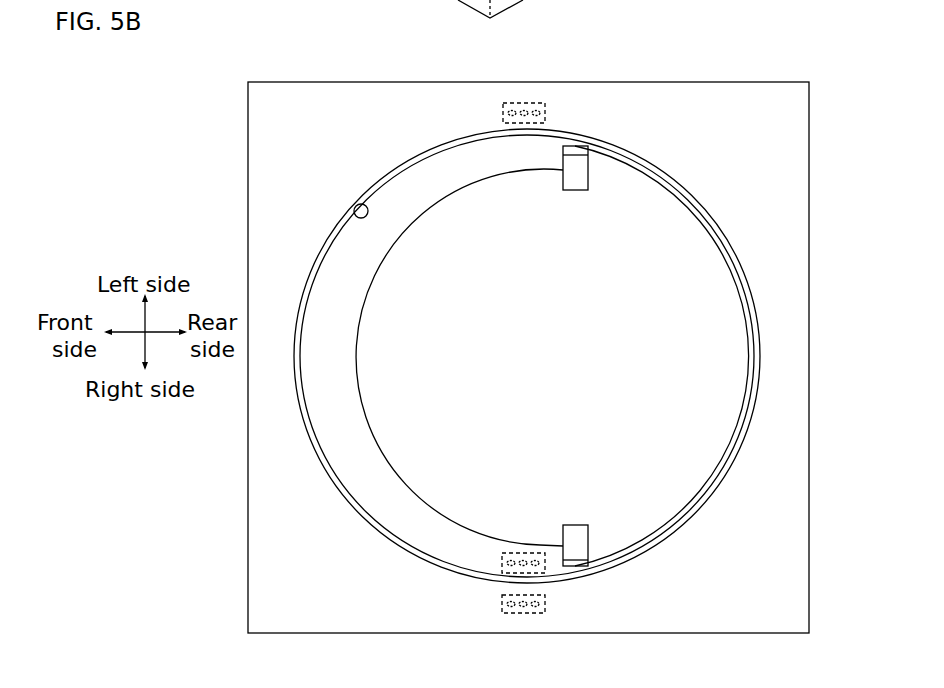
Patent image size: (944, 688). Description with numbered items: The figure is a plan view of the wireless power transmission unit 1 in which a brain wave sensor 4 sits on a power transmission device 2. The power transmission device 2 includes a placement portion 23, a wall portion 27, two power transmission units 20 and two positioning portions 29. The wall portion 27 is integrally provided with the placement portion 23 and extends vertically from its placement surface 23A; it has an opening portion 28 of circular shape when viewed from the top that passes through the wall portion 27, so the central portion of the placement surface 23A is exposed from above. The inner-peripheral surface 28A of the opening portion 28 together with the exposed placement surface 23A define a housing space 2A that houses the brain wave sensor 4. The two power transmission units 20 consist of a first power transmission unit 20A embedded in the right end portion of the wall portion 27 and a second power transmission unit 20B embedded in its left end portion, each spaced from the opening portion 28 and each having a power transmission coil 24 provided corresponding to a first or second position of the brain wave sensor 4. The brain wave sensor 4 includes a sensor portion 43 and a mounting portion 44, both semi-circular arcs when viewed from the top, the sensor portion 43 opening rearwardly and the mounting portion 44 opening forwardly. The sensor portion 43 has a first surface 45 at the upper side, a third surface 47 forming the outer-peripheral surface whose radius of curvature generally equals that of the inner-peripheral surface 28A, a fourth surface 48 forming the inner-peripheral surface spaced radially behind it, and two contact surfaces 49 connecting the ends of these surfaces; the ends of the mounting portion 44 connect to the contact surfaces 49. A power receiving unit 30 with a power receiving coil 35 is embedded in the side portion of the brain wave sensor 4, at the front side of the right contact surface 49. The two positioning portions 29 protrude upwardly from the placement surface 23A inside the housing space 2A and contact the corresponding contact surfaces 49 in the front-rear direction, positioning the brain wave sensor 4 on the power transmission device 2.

The vehicle 1 is at (420, 32).
The power transmission device 2 is at (686, 78).
The housing space 2A is at (644, 290).
The brain wave sensor 4 is at (429, 164).
The power transmission units 20 is at (586, 355).
The first power transmission unit 20A is at (525, 618).
The second power transmission unit 20B is at (570, 64).
The placement portion 23 is at (779, 339).
The placement surface 23A is at (658, 357).
The power transmission coil 24 is at (547, 125).
The wall portion 27 is at (774, 187).
The opening portion 28 is at (347, 171).
The inner-peripheral surface 28A is at (360, 204).
The positioning portions 29 is at (578, 192).
The power receiving unit 30 is at (519, 550).
The power receiving coil 35 is at (542, 551).
The sensor portion 43 is at (362, 276).
The mounting portion 44 is at (724, 478).
The first surface 45 is at (400, 503).
The third surface 47 is at (298, 402).
The fourth surface 48 is at (362, 340).
The contact surfaces 49 is at (626, 610).